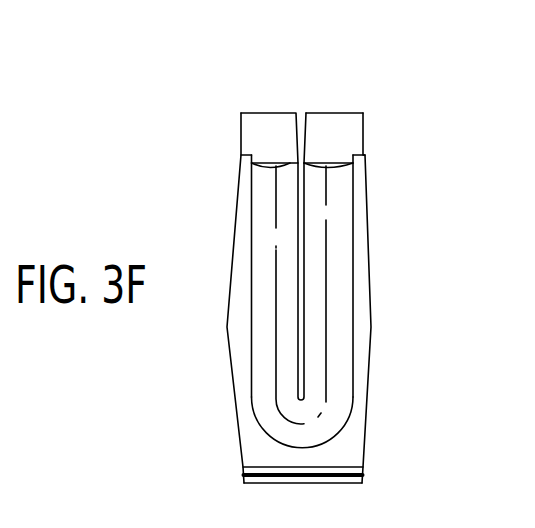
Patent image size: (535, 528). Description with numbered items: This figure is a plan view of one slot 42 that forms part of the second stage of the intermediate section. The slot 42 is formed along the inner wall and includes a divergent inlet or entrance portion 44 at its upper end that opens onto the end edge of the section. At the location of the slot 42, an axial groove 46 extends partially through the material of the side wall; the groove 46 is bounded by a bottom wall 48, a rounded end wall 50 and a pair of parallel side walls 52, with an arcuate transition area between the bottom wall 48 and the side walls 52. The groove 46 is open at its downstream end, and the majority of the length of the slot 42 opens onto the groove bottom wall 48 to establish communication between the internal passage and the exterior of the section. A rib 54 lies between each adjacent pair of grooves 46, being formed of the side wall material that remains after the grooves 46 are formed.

The divergent inlet or entrance portion 44 is at (302, 117).
The rib 54 is at (235, 215).
The slot 42 is at (302, 250).
The side walls 52 is at (252, 307).
The axial groove 46 is at (268, 348).
The bottom wall 48 is at (315, 361).
The end wall 50 is at (323, 467).